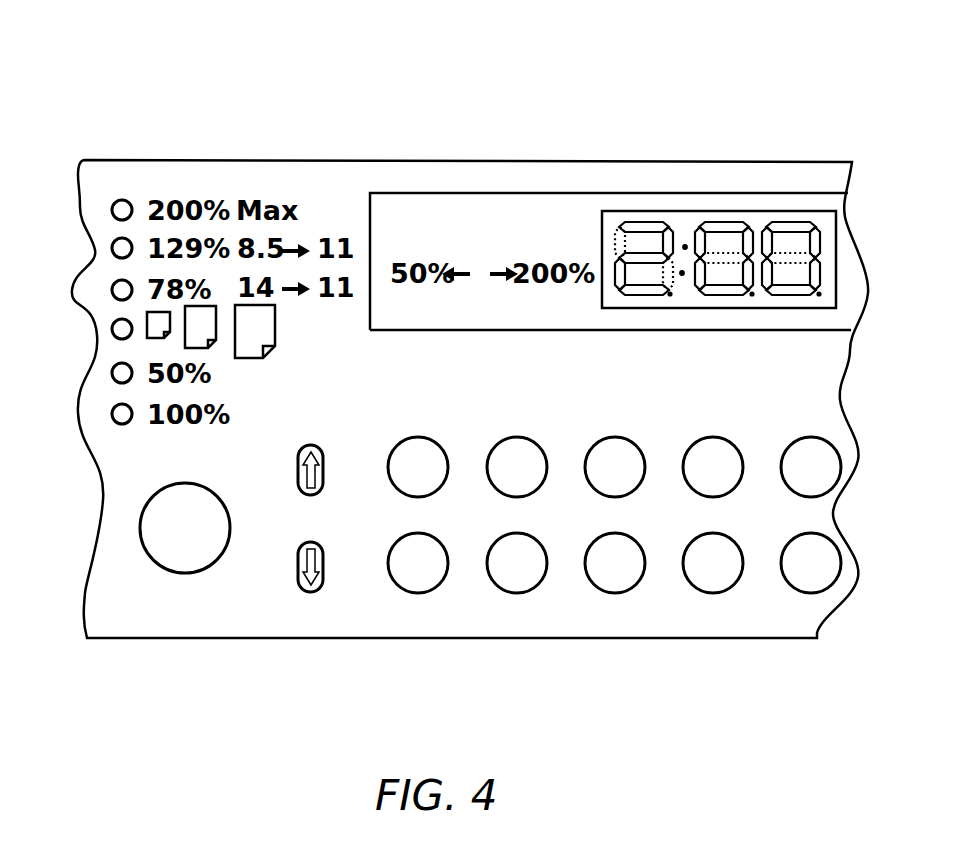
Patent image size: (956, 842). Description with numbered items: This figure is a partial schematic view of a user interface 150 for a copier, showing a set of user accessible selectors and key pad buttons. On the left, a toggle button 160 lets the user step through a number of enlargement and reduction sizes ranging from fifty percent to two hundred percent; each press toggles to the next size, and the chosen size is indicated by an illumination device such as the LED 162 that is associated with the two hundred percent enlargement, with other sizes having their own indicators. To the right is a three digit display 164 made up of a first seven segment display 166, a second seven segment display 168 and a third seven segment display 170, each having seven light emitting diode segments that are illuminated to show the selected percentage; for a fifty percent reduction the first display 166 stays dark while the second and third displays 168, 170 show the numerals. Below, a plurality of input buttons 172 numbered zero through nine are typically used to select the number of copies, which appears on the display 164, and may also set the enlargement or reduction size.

The user interface 150 is at (317, 98).
The toggle button 160 is at (177, 560).
The LED 162 is at (124, 205).
The three digit display 164 is at (588, 213).
The first seven segment display 166 is at (669, 228).
The second seven segment display 168 is at (728, 228).
The third seven segment display 170 is at (788, 226).
The input buttons 172 is at (504, 604).